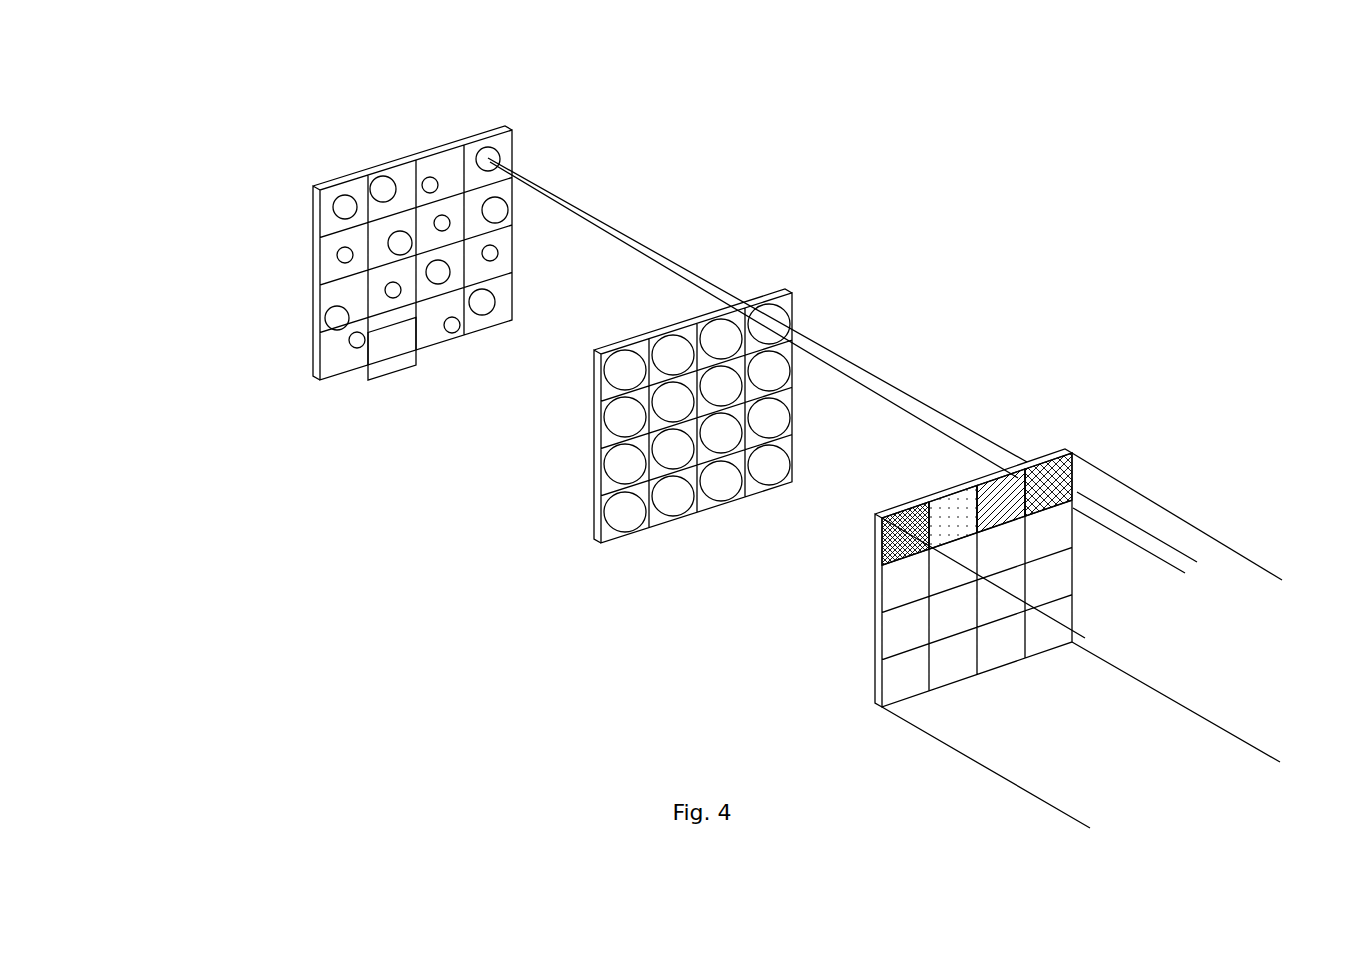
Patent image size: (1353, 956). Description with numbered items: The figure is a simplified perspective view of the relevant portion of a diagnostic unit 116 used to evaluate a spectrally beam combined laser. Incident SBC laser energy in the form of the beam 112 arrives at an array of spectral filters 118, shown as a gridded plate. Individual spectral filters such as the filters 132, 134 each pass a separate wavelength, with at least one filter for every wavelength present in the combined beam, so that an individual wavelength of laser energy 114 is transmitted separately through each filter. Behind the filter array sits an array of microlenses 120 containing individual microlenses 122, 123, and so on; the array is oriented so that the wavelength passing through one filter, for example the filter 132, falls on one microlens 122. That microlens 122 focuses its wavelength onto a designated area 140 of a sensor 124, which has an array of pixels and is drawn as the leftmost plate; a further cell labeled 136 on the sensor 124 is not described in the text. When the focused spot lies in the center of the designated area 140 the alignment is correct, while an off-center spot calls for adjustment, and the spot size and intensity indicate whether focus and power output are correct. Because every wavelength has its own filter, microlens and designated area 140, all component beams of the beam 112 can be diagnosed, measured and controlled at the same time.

The beam 112 is at (1251, 556).
The individual wavelength of laser energy 114 is at (1147, 543).
The diagnostic unit 116 is at (828, 69).
The array of spectral filters 118 is at (1060, 590).
The array of microlenses 120 is at (693, 388).
The microlens 122 is at (772, 305).
The microlens 123 is at (713, 338).
The sensor 124 is at (430, 288).
The spectral filter 132 is at (1036, 500).
The spectral filter 134 is at (958, 505).
The aperture array cell 136 is at (405, 342).
The designated area 140 is at (524, 157).